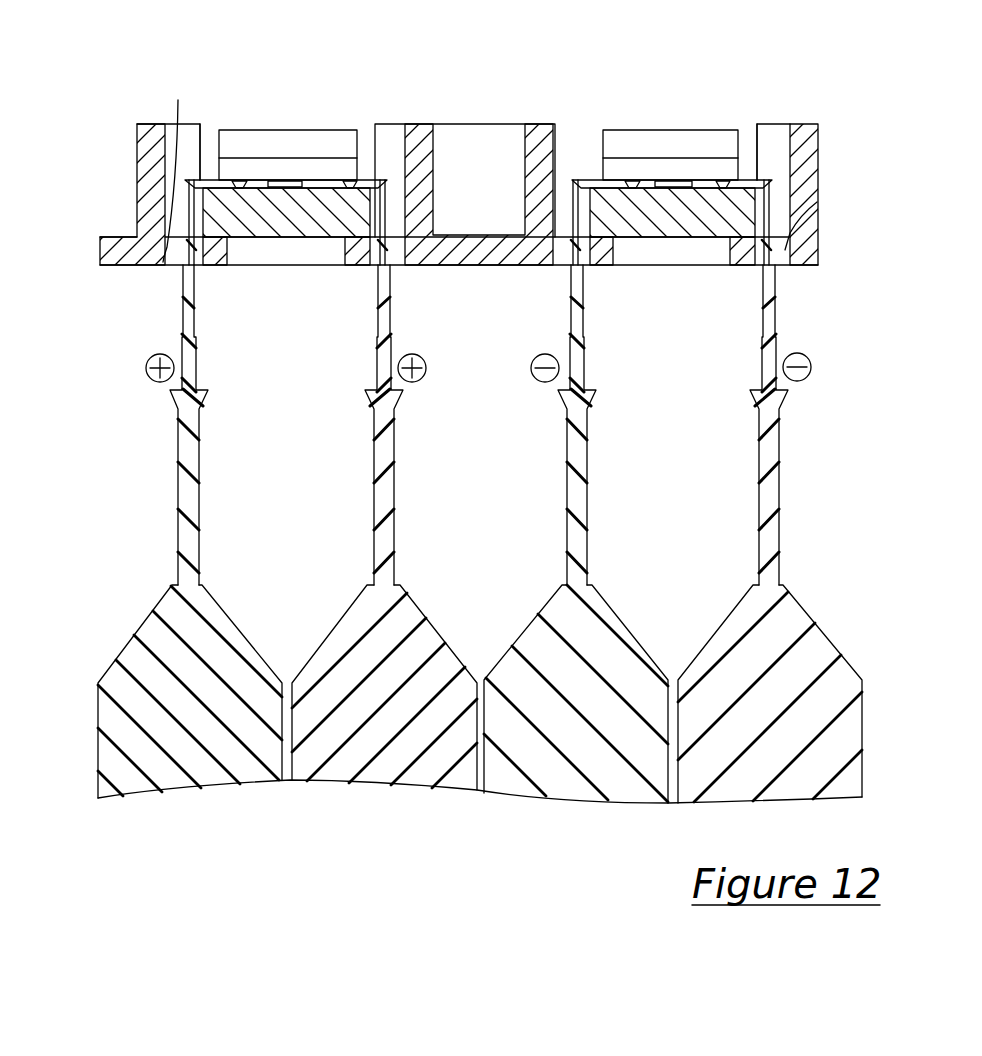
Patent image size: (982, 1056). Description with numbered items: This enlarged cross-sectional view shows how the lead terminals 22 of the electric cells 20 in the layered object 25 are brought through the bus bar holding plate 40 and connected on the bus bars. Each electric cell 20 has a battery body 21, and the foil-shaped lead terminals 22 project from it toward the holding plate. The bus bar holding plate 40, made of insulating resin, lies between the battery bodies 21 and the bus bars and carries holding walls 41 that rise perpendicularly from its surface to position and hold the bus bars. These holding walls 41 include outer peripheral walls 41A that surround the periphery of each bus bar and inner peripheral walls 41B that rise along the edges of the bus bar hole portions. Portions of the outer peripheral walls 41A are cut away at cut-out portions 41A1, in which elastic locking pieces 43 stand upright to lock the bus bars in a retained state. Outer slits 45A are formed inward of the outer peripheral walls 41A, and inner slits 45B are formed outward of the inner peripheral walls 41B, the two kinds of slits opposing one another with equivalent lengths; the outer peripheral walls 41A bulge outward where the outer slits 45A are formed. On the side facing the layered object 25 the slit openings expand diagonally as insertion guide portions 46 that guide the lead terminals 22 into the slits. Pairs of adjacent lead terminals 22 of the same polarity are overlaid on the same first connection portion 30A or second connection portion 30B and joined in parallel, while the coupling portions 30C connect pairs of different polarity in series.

The electric cell 20 is at (487, 534).
The battery body 21 is at (480, 684).
The lead terminal 22 is at (760, 525).
The layered object 25 is at (88, 757).
The first connection portion 30A is at (282, 190).
The second connection portion 30B is at (675, 207).
The coupling portion 30C is at (563, 197).
The bus bar holding plate 40 is at (89, 127).
The holding wall 41 is at (805, 123).
The outer peripheral wall 41A is at (147, 124).
The cut-out portion 41A1 is at (211, 143).
The inner peripheral wall 41B is at (537, 123).
The elastic locking piece 43 is at (319, 130).
The outer slit 45A is at (178, 100).
The inner slit 45B is at (388, 205).
The insertion guide portion 46 is at (368, 268).